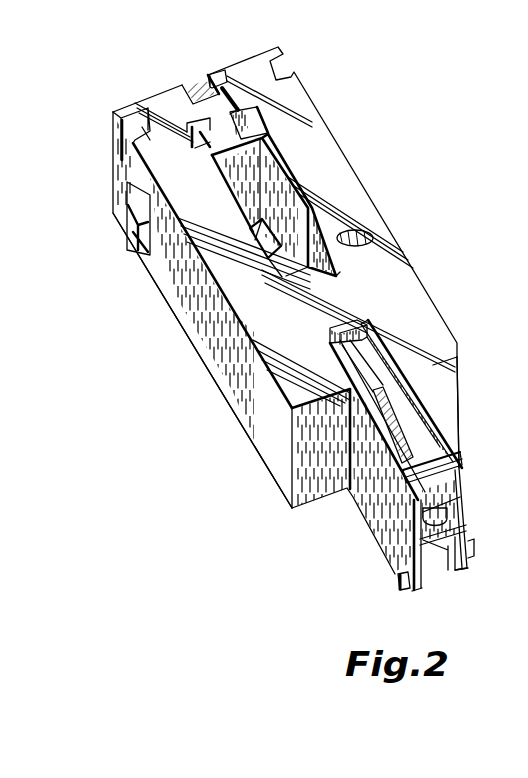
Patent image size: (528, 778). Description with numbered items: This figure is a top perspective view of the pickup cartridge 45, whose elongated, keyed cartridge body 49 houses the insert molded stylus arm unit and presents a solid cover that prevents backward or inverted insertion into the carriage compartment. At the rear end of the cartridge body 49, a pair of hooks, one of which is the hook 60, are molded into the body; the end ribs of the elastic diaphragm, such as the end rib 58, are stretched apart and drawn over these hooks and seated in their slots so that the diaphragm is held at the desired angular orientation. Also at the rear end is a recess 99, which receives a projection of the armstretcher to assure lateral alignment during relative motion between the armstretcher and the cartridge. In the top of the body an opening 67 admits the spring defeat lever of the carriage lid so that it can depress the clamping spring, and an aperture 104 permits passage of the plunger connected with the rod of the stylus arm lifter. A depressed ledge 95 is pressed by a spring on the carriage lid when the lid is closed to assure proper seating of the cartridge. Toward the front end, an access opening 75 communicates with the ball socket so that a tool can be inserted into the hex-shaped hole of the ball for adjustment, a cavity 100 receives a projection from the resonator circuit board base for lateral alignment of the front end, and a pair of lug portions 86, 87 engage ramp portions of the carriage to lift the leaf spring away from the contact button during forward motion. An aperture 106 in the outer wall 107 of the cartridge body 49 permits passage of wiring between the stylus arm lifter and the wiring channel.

The cartridge 45 is at (290, 310).
The cartridge body 49 is at (414, 281).
The end rib 58 is at (128, 203).
The hook 60 is at (137, 228).
The opening 67 is at (283, 183).
The access opening 75 is at (443, 516).
The lug portion 86 is at (398, 583).
The lug portion 87 is at (474, 548).
The depressed ledge 95 is at (357, 347).
The recess 99 is at (197, 90).
The cavity 100 is at (458, 562).
The aperture 104 is at (372, 240).
The aperture 106 is at (233, 415).
The outer wall 107 is at (458, 363).